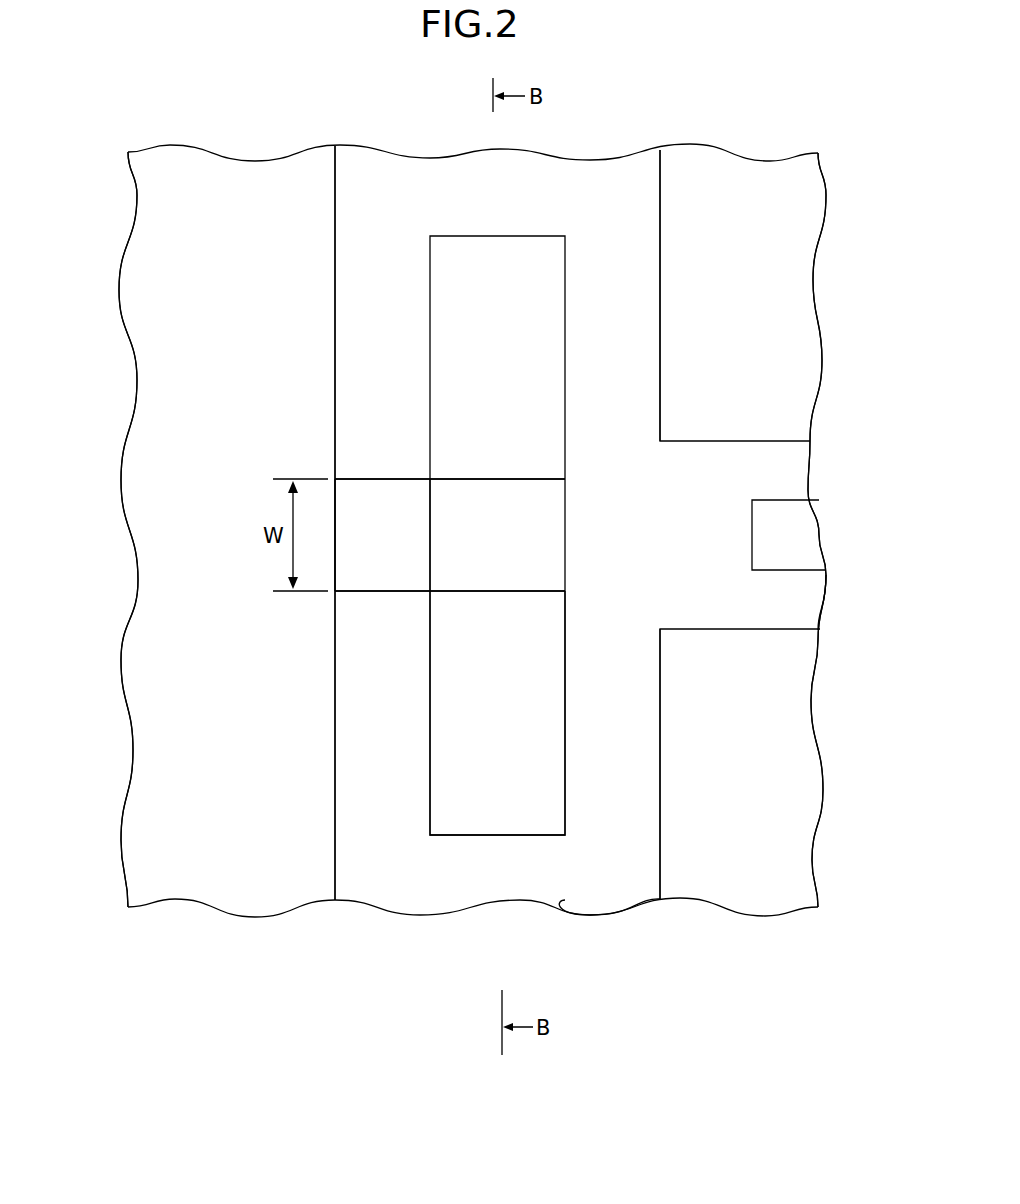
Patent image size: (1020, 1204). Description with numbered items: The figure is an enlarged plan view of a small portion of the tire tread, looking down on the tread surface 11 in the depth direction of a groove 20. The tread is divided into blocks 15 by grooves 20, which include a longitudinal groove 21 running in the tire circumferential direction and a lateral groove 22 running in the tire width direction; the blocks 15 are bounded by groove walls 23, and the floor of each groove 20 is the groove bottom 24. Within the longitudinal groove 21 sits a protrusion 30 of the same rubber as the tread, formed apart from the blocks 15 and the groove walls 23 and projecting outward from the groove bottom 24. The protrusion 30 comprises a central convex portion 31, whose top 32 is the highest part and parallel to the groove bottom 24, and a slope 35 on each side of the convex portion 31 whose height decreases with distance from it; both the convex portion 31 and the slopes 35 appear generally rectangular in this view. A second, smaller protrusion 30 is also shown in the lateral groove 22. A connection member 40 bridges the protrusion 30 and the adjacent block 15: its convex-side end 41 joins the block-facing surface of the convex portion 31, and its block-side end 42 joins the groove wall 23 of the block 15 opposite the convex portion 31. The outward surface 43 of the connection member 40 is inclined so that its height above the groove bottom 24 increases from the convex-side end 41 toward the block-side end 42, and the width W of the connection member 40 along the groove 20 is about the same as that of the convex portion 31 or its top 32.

The tread surface 11 is at (180, 338).
The block 15 is at (175, 632).
The groove 20 is at (587, 545).
The longitudinal groove 21 is at (407, 872).
The lateral groove 22 is at (790, 452).
The groove wall 23 is at (660, 193).
The groove bottom 24 is at (802, 587).
The protrusion 30 is at (403, 300).
The convex portion 31 is at (465, 468).
The top 32 is at (472, 512).
The slope 35 is at (465, 748).
The connection member 40 is at (357, 477).
The convex-side end 41 is at (430, 562).
The block-side end 42 is at (336, 565).
The outward surface 43 is at (413, 507).